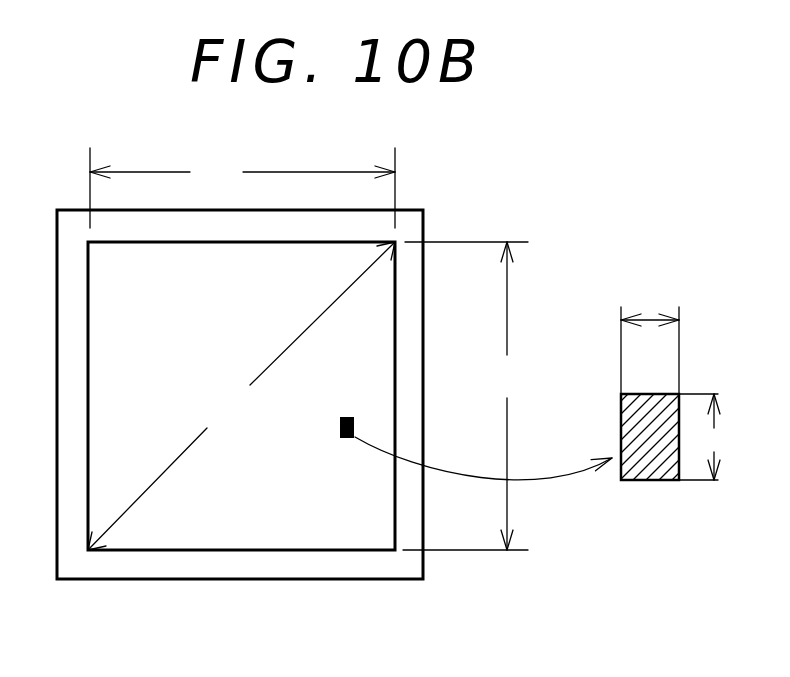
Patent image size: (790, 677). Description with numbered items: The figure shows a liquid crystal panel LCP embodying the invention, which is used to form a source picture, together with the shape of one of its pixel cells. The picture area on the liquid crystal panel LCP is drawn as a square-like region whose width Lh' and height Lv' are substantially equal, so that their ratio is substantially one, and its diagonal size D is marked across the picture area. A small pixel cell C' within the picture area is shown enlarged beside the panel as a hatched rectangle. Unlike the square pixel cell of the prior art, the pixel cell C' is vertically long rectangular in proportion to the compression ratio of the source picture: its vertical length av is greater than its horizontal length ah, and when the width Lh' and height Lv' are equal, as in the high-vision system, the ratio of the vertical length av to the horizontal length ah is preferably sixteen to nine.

The liquid crystal panel LCP is at (426, 223).
The width of source picture Lh' is at (242, 188).
The height of source picture Lv' is at (468, 396).
The diagonal size of picture D is at (241, 396).
The pixel cell C' is at (509, 470).
The horizontal length of pixel cell ah is at (650, 318).
The vertical length of pixel cell av is at (704, 437).